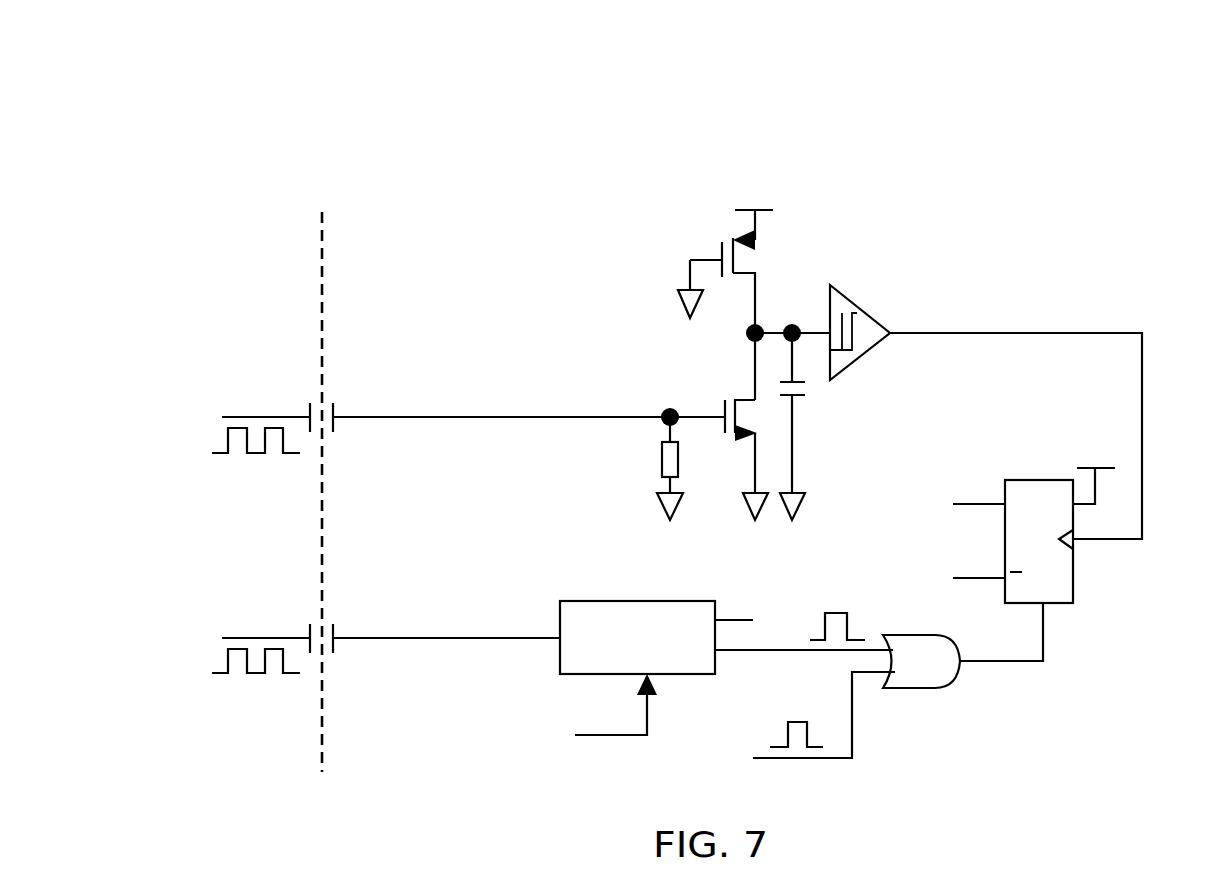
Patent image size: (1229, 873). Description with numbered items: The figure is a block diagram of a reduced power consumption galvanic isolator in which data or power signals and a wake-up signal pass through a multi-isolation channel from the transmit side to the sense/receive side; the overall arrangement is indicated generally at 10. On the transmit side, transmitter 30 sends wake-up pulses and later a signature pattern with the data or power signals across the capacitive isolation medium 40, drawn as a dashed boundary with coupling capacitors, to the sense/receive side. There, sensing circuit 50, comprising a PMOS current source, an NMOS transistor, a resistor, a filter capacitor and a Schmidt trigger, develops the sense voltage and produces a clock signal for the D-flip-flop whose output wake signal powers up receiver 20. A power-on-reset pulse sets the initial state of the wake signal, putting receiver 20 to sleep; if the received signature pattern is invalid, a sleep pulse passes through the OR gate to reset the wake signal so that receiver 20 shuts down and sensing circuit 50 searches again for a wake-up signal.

The wake-up detection system 10 is at (1133, 123).
The receiver 20 is at (1060, 710).
The transmitter 30 is at (209, 186).
The isolation medium 40 is at (322, 210).
The sensing circuit 50 is at (650, 215).